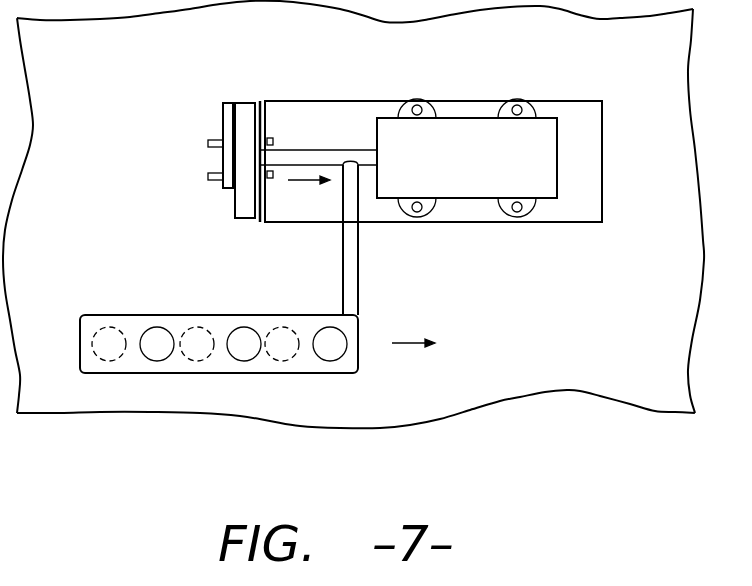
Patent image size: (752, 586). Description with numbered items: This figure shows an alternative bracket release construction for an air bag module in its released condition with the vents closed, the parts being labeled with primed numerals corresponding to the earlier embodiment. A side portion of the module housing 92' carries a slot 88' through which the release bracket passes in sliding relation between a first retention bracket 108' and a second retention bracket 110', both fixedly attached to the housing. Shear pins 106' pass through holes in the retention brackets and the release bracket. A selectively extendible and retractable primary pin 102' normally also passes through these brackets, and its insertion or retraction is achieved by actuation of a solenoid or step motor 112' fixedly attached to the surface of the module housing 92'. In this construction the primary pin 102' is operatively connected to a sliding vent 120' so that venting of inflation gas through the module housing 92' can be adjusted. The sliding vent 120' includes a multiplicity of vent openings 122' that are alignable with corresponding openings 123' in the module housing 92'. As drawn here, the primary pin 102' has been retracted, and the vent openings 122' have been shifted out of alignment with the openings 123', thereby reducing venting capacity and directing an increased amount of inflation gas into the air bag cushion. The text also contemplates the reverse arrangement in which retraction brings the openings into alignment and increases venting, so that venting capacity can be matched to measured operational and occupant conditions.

The module housing 92' is at (370, 234).
The primary pin 102' is at (431, 201).
The first retention bracket 108' is at (306, 131).
The slot 88' is at (215, 186).
The second retention bracket 110' is at (169, 145).
The shear pins 106' is at (191, 158).
The solenoid or step motor 112' is at (528, 160).
The sliding vent 120' is at (245, 364).
The vent openings 122' is at (208, 321).
The openings 123' is at (157, 394).